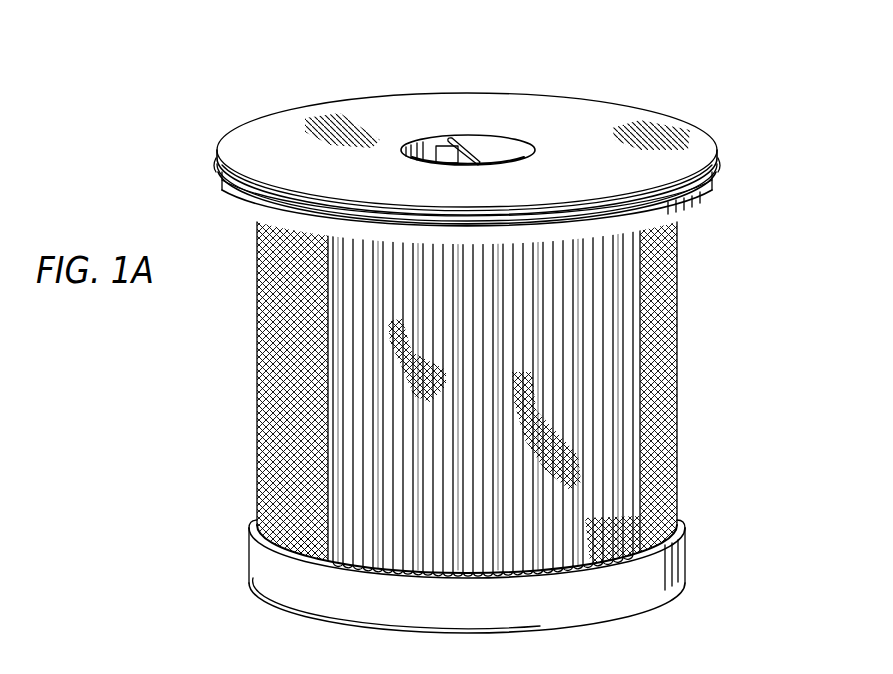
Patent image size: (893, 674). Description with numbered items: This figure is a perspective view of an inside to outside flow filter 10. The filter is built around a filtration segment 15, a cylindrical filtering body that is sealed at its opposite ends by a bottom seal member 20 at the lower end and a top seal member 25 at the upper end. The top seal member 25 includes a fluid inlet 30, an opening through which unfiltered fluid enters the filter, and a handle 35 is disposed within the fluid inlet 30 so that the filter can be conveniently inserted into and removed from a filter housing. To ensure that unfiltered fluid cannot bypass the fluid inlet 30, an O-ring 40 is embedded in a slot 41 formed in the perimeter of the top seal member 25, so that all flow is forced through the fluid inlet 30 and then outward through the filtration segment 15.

The inside to outside flow filter 10 is at (610, 60).
The filtration segment 15 is at (677, 360).
The bottom seal member 20 is at (687, 558).
The top seal member 25 is at (703, 133).
The fluid inlet 30 is at (506, 147).
The handle 35 is at (462, 140).
The O-ring 40 is at (717, 163).
The slot 41 is at (708, 197).